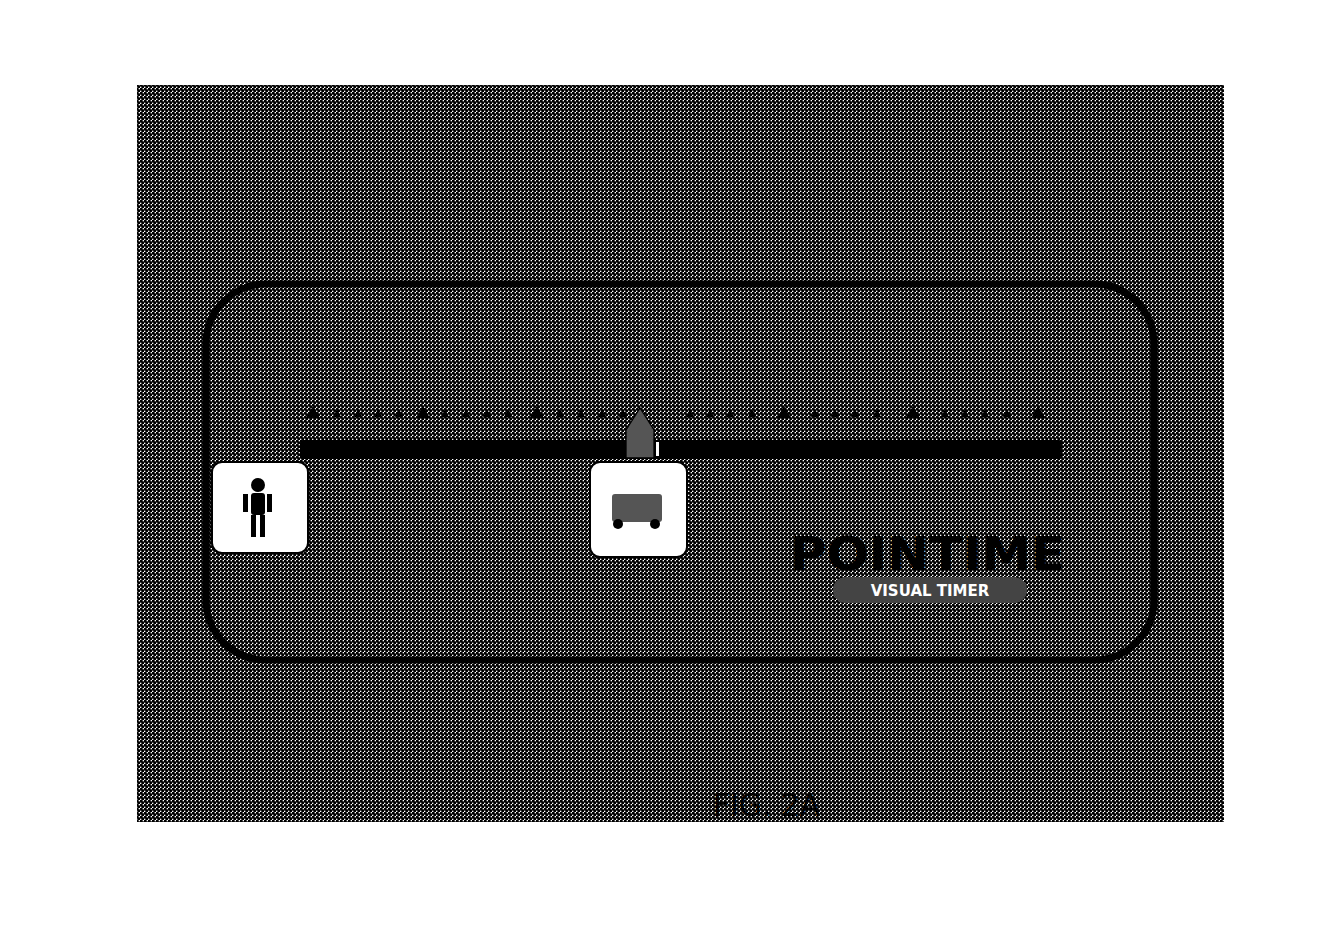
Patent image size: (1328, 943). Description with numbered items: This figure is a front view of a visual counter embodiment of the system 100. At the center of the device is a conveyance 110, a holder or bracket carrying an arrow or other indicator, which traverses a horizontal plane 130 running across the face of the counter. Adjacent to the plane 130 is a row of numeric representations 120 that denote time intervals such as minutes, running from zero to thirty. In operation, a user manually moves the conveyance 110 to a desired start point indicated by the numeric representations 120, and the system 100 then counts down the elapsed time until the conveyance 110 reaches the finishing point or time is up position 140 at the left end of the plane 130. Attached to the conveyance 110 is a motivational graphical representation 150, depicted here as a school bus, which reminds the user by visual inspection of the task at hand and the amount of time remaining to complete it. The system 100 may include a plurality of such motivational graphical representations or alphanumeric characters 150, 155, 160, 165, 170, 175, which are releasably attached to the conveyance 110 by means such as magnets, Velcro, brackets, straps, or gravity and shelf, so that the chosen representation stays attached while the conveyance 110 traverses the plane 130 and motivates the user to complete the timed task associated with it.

The system 100 is at (257, 93).
The conveyance 110 is at (603, 460).
The numeric representations 120 is at (1067, 365).
The plane 130 is at (1023, 477).
The time is up position 140 is at (287, 382).
The motivational graphical representation 150 is at (650, 548).
The motivational graphical representation 155 is at (435, 267).
The motivational graphical representation 160 is at (502, 263).
The motivational graphical representation 165 is at (575, 263).
The motivational graphical representation 170 is at (668, 257).
The motivational graphical representation 175 is at (770, 257).